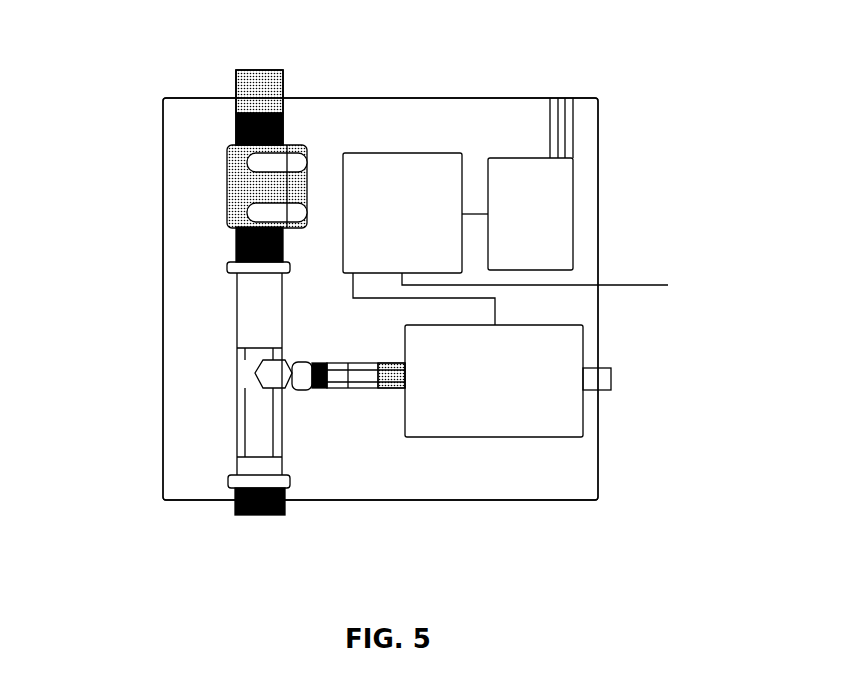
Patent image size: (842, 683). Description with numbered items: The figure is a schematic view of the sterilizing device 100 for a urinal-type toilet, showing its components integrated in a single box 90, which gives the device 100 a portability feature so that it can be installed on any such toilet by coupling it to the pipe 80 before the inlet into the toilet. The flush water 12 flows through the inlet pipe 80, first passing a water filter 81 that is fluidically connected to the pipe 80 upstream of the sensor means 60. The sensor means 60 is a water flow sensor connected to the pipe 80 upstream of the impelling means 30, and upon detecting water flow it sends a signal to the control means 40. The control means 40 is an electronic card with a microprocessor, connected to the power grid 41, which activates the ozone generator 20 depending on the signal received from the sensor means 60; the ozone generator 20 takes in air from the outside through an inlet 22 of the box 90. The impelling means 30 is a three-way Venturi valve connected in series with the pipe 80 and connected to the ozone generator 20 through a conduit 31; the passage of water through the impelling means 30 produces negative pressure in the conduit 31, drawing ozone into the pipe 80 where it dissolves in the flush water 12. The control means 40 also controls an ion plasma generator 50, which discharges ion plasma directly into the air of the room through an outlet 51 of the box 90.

The flush water 12 is at (268, 68).
The inlet pipe 80 is at (237, 75).
The water filter 81 is at (272, 95).
The sensor means 60 is at (263, 217).
The impelling means 30 is at (257, 362).
The conduit 31 is at (327, 388).
The control means 40 is at (427, 175).
The ion plasma generator 50 is at (558, 203).
The outlet 51 is at (560, 97).
The power grid 41 is at (645, 287).
The ozone generator 20 is at (567, 417).
The inlet 22 is at (607, 385).
The box 90 is at (185, 500).
The sterilizing device 100 is at (606, 514).